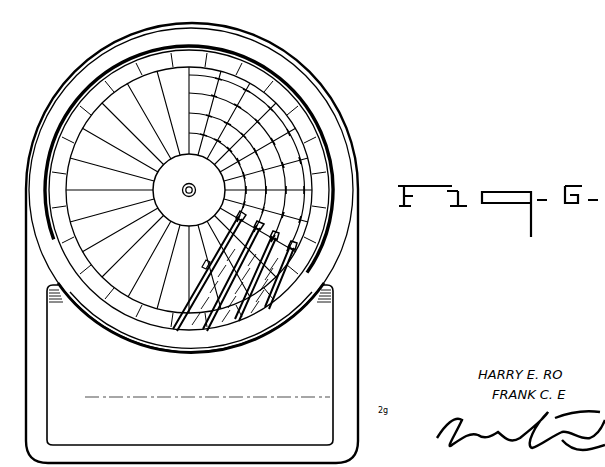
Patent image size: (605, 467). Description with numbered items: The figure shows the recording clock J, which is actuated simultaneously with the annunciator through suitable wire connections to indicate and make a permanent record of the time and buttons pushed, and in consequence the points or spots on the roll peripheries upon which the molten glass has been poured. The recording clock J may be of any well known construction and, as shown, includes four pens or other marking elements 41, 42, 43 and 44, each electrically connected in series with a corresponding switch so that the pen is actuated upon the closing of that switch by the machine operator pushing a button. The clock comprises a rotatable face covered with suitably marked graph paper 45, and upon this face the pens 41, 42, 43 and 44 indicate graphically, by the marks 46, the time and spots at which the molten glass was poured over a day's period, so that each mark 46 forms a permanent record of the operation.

The pen 41 is at (222, 210).
The pen 42 is at (198, 187).
The pen 43 is at (294, 309).
The pen 44 is at (308, 250).
The graph paper 45 is at (117, 97).
The marks 46 is at (196, 108).
The recording clock J is at (348, 192).